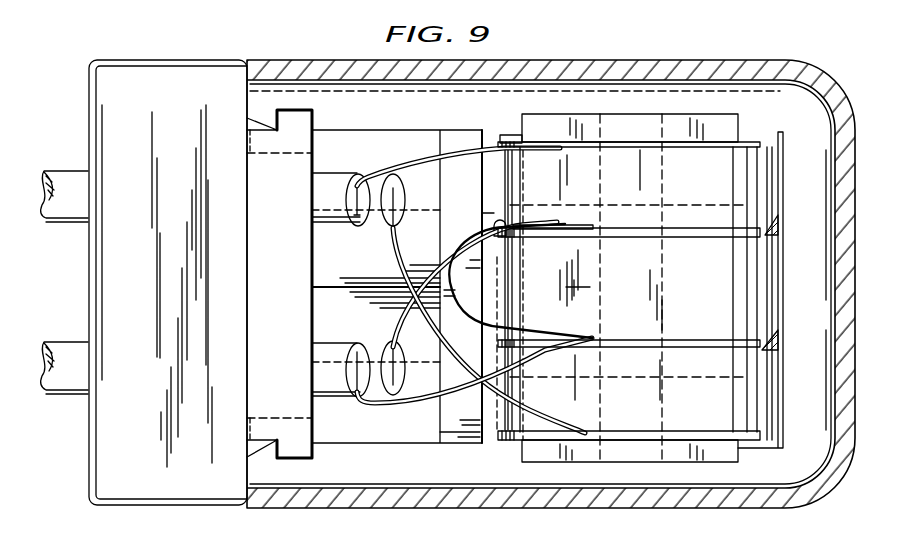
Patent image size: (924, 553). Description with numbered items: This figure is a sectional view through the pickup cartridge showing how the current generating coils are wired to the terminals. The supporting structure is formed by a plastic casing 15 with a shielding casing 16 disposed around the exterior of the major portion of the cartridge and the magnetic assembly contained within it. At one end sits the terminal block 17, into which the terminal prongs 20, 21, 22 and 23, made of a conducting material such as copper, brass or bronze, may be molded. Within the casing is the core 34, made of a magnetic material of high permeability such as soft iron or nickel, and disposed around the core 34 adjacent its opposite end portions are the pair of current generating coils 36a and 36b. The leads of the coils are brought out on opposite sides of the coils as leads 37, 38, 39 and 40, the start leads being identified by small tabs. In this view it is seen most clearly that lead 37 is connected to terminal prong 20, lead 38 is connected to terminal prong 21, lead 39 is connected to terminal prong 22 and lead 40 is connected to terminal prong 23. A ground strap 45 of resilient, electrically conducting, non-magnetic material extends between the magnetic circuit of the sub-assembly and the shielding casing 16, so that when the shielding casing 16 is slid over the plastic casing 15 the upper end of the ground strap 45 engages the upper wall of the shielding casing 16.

The plastic casing 15 is at (785, 484).
The shielding casing 16 is at (596, 516).
The terminal block 17 is at (170, 60).
The terminal prong 20 is at (70, 212).
The terminal prong 21 is at (374, 350).
The terminal prong 22 is at (70, 383).
The terminal prong 23 is at (386, 208).
The core 34 is at (600, 166).
The current generating coil 36a is at (676, 166).
The current generating coil 36b is at (632, 422).
The lead 37 is at (432, 146).
The lead 38 is at (437, 268).
The lead 39 is at (422, 403).
The lead 40 is at (497, 400).
The ground strap 45 is at (574, 288).